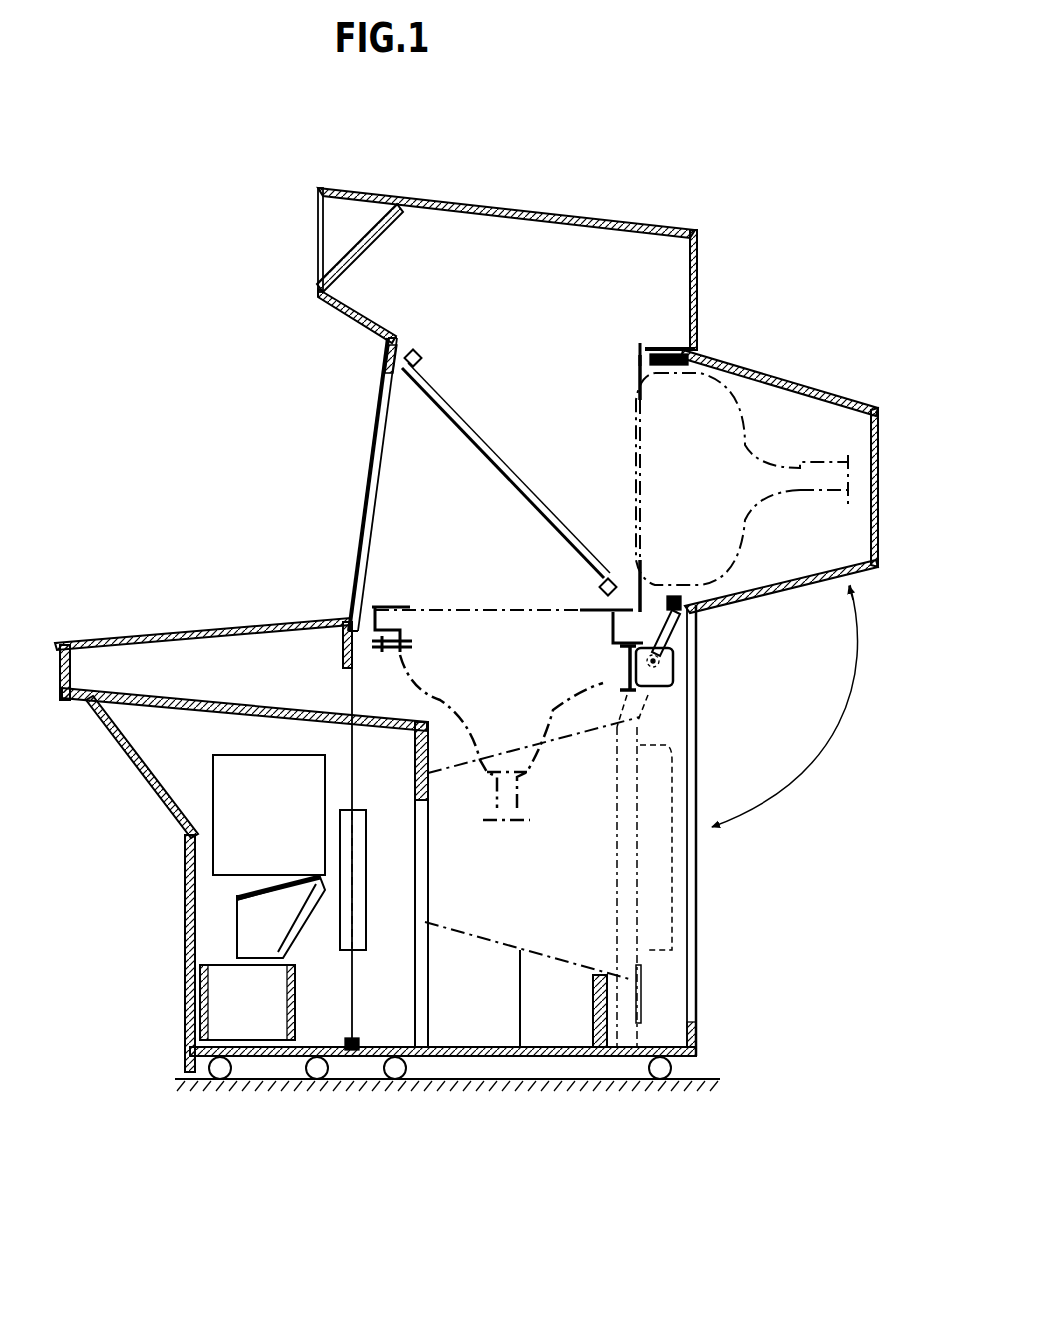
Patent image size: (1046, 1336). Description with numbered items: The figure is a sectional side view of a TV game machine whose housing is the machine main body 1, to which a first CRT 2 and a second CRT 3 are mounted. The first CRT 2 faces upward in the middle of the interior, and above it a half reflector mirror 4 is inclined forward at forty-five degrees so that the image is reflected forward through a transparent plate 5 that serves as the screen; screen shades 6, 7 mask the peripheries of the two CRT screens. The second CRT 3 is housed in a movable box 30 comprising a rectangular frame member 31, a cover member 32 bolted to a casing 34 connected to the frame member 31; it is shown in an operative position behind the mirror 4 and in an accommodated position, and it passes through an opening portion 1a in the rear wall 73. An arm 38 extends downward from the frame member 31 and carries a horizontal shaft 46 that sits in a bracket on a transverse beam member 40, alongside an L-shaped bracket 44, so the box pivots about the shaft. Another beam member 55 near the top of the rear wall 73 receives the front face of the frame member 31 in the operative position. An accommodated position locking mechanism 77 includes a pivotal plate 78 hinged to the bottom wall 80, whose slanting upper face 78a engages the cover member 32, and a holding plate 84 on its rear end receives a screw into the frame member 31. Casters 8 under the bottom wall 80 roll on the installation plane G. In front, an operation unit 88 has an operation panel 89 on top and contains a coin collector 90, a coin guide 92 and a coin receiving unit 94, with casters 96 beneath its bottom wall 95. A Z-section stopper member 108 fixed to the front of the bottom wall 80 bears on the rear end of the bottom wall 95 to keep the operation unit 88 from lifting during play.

The machine main body 1 is at (652, 216).
The opening portion 1a is at (698, 848).
The first CRT 2 is at (492, 603).
The second CRT 3 is at (632, 438).
The half reflector mirror 4 is at (495, 458).
The transparent plate 5 is at (372, 442).
The screen shade 6 is at (388, 605).
The screen shade 7 is at (630, 378).
The casters 8 is at (397, 1070).
The movable box 30 is at (690, 658).
The frame member 31 is at (697, 316).
The cover member 32 is at (847, 400).
The casing 34 is at (800, 580).
The arm 38 is at (682, 632).
The beam member 40 is at (612, 738).
The bracket 44 is at (672, 670).
The horizontal shaft 46 is at (660, 660).
The beam member 55 is at (662, 346).
The rear wall 73 is at (699, 258).
The accommodated position locking mechanism 77 is at (597, 945).
The pivotal plate 78 is at (572, 1044).
The upper face 78a is at (565, 955).
The bottom wall 80 is at (470, 1046).
The holding plate 84 is at (645, 990).
The operation unit 88 is at (241, 798).
The operation panel 89 is at (118, 640).
The coin collector 90 is at (235, 786).
The coin guide 92 is at (247, 928).
The coin receiving unit 94 is at (220, 1000).
The bottom wall 95 is at (268, 1060).
The casters 96 is at (218, 1070).
The stopper member 108 is at (355, 1058).
The installation plane G is at (705, 1079).